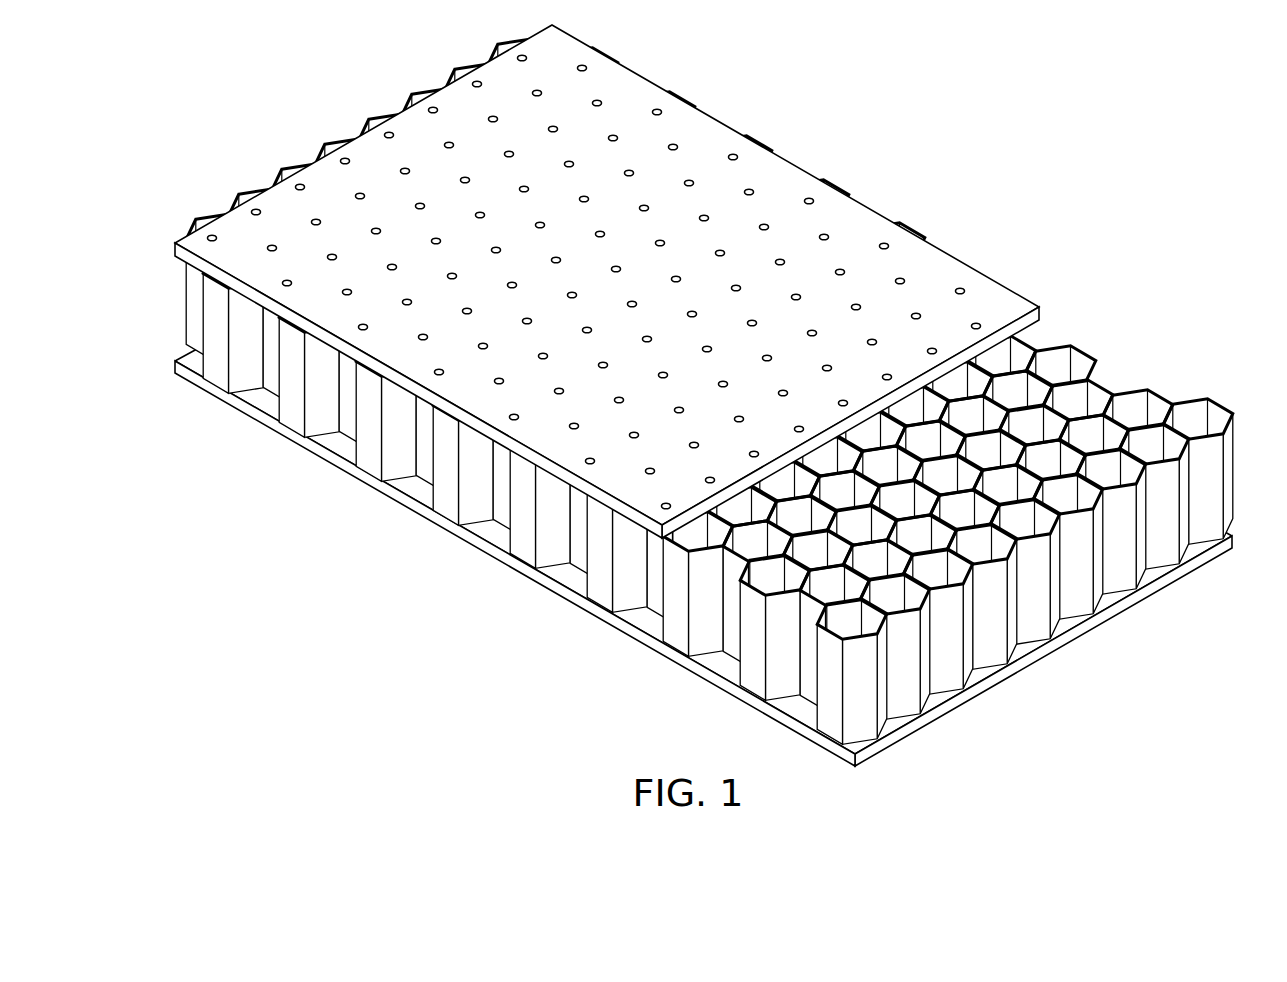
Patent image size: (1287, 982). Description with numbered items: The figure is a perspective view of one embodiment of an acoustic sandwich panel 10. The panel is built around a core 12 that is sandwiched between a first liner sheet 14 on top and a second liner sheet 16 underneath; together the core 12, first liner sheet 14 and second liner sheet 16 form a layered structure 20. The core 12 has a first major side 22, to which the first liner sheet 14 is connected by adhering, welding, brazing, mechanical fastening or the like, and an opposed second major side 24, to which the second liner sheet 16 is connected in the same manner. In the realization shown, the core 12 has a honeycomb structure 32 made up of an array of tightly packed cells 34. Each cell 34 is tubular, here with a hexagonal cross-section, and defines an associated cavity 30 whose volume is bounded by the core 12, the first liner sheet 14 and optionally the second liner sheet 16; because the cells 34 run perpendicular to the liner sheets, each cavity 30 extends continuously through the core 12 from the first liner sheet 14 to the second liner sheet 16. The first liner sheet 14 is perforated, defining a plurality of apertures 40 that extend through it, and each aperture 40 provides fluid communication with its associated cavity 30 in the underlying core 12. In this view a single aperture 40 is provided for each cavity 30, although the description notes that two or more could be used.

The acoustic sandwich panel 10 is at (992, 126).
The core 12 is at (689, 392).
The first liner sheet 14 is at (559, 281).
The second liner sheet 16 is at (703, 557).
The layered structure 20 is at (462, 595).
The first major side 22 is at (174, 265).
The second major side 24 is at (183, 337).
The cavity 30 is at (1083, 349).
The honeycomb structure 32 is at (1141, 352).
The cell 34 is at (1226, 486).
The aperture 40 is at (736, 151).